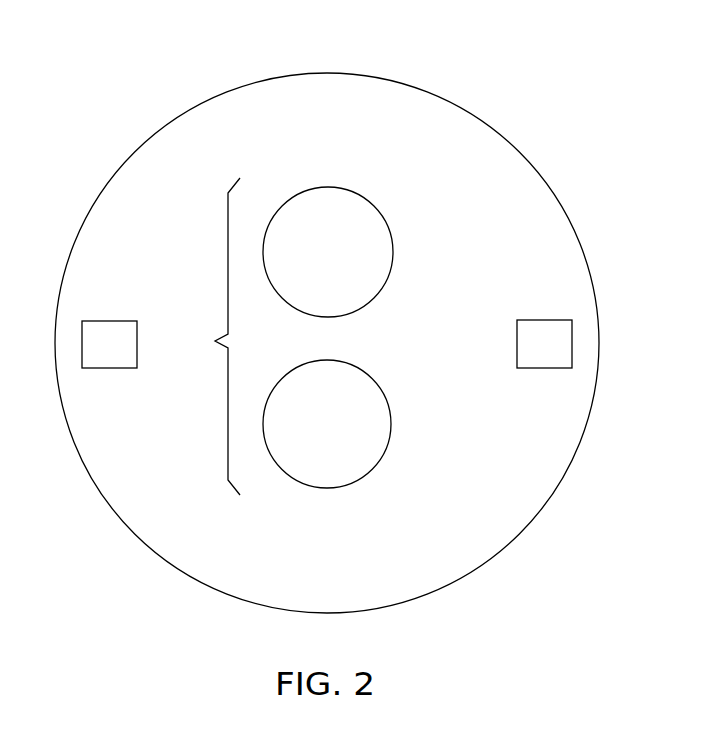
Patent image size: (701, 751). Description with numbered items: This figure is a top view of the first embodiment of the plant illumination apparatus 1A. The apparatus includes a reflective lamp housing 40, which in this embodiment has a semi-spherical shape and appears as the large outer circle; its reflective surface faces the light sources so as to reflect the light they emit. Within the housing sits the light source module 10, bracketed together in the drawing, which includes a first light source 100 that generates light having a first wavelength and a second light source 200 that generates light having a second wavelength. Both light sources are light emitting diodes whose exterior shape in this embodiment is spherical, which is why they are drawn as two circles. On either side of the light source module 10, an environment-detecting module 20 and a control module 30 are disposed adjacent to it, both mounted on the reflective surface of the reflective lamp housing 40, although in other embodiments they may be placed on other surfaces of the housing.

The plant illumination apparatus 1A is at (74, 51).
The light source module 10 is at (290, 336).
The first light source 100 is at (349, 263).
The second light source 200 is at (348, 438).
The environment-detecting module 20 is at (555, 355).
The control module 30 is at (123, 356).
The reflective lamp housing 40 is at (190, 520).